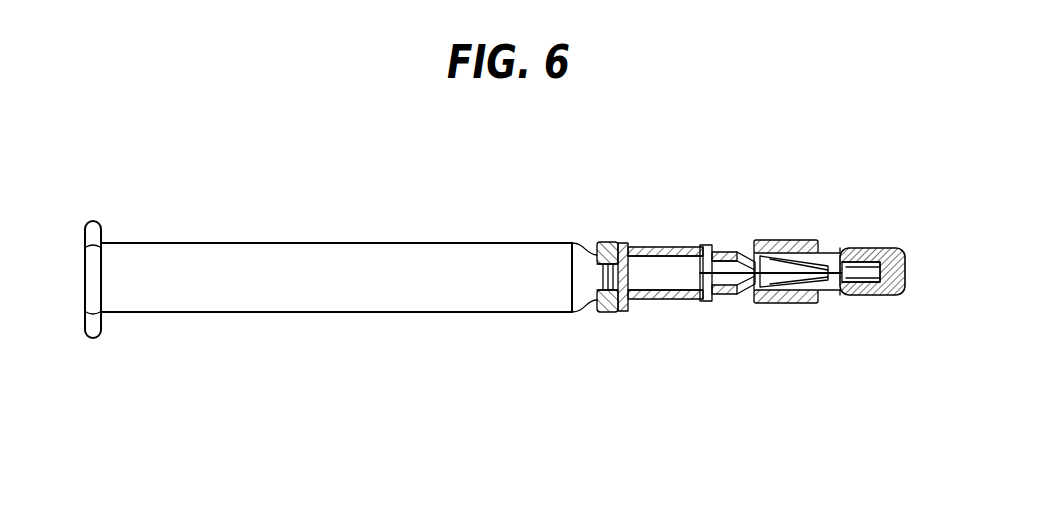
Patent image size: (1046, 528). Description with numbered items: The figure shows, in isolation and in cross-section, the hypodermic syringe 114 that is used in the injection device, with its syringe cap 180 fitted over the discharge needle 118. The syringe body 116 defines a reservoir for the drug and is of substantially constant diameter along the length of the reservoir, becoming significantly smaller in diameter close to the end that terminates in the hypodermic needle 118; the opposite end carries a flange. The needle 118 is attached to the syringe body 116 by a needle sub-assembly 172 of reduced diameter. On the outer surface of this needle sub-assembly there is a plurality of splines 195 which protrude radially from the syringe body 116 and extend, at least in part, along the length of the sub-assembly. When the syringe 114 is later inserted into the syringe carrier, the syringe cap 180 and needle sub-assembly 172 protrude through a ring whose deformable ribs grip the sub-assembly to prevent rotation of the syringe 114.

The hypodermic syringe 114 is at (244, 243).
The syringe body 116 is at (482, 255).
The splines 195 is at (640, 243).
The needle sub-assembly 172 is at (720, 248).
The hypodermic needle 118 is at (830, 252).
The syringe cap 180 is at (903, 250).